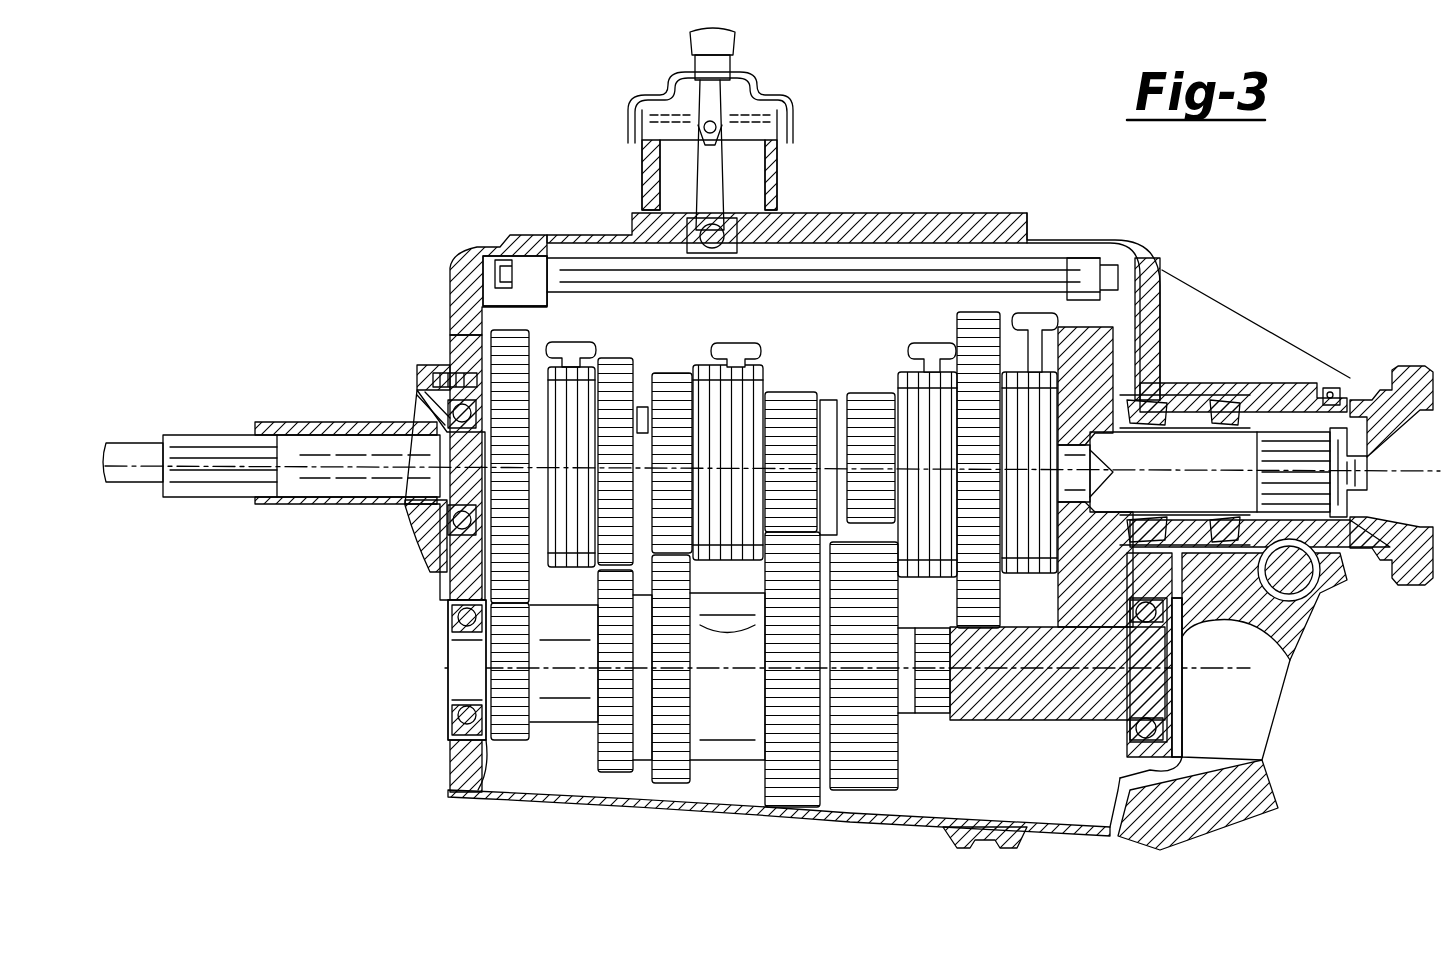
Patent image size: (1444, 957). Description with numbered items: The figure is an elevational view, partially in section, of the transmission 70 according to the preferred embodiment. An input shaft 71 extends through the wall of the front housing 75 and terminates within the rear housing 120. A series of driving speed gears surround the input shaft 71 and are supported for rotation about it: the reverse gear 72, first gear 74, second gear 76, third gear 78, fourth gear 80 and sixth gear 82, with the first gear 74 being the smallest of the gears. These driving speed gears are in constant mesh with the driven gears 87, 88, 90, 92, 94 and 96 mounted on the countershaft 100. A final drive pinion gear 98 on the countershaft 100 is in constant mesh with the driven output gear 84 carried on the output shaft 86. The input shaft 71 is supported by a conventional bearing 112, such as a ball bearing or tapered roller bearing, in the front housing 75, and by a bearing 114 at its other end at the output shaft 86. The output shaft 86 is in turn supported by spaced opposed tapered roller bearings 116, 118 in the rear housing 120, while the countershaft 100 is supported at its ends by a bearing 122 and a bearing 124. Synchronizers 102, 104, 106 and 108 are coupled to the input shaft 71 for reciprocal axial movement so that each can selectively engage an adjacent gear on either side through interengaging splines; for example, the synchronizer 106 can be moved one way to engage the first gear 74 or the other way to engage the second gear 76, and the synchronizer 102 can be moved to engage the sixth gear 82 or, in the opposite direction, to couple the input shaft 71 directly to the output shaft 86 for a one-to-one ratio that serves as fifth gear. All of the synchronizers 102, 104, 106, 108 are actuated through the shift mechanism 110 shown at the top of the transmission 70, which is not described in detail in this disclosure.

The transmission 70 is at (840, 203).
The input shaft 71 is at (198, 427).
The reverse gear 72 is at (867, 393).
The first gear 74 is at (792, 392).
The front housing 75 is at (450, 343).
The second gear 76 is at (677, 373).
The third gear 78 is at (600, 360).
The fourth gear 80 is at (490, 305).
The sixth gear 82 is at (975, 312).
The driven output gear 84 is at (1135, 395).
The output shaft 86 is at (1230, 453).
The driven gear 87 is at (903, 790).
The driven gear 88 is at (790, 807).
The driven gear 90 is at (668, 783).
The driven gear 92 is at (617, 772).
The driven gear 94 is at (510, 740).
The driven gear 96 is at (1017, 718).
The final drive pinion gear 98 is at (1110, 827).
The countershaft 100 is at (988, 695).
The synchronizer 102 is at (1030, 313).
The synchronizer 104 is at (935, 343).
The synchronizer 106 is at (722, 343).
The synchronizer 108 is at (565, 343).
The shift mechanism 110 is at (740, 40).
The bearing 112 is at (428, 515).
The bearing 114 is at (1135, 415).
The tapered roller bearing 116 is at (1240, 620).
The tapered roller bearing 118 is at (1262, 556).
The rear housing 120 is at (1097, 242).
The bearing 122 is at (450, 740).
The bearing 124 is at (1263, 760).